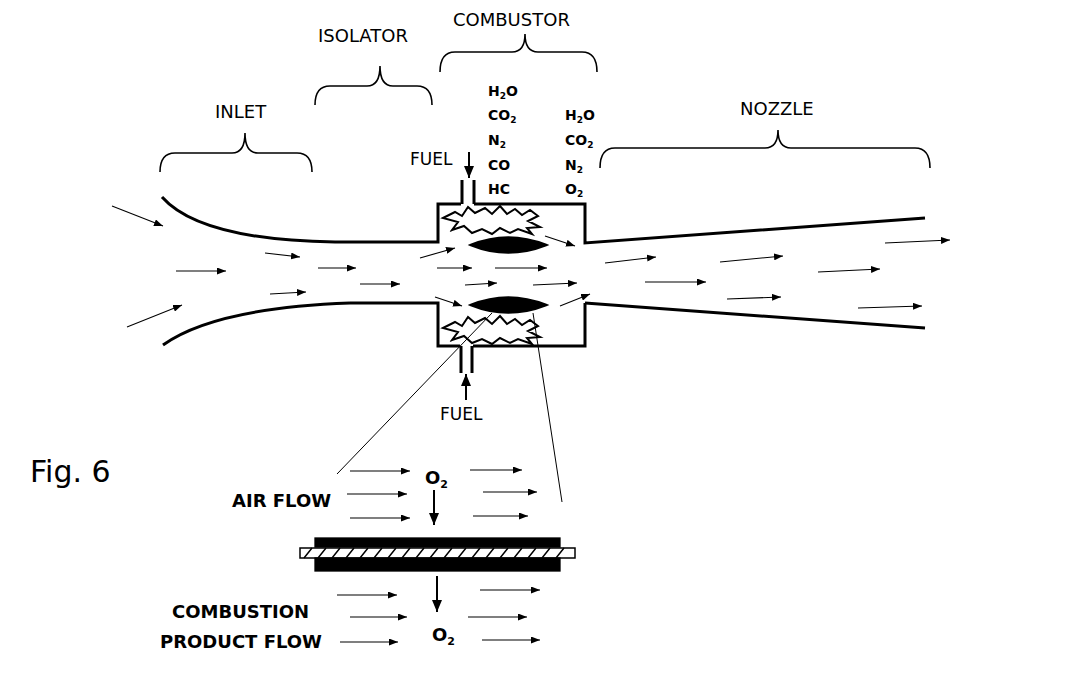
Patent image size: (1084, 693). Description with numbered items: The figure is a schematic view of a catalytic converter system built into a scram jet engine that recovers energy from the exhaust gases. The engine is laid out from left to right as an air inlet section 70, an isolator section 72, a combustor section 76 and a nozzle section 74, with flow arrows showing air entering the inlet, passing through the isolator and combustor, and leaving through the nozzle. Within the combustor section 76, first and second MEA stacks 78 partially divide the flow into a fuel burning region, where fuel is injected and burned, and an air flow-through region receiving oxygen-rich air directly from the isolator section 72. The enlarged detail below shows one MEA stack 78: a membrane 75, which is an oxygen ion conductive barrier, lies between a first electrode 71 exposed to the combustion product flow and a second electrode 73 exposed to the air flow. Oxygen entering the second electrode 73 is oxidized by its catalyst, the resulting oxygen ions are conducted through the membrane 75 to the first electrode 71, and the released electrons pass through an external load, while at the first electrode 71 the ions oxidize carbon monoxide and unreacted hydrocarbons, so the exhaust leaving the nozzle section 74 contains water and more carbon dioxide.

The air inlet section 70 is at (251, 306).
The isolator section 72 is at (357, 304).
The nozzle section 74 is at (740, 316).
The combustor section 76 is at (563, 347).
The MEA stack 78 is at (537, 313).
The second electrode 73 is at (548, 537).
The membrane 75 is at (300, 553).
The first electrode 71 is at (548, 572).